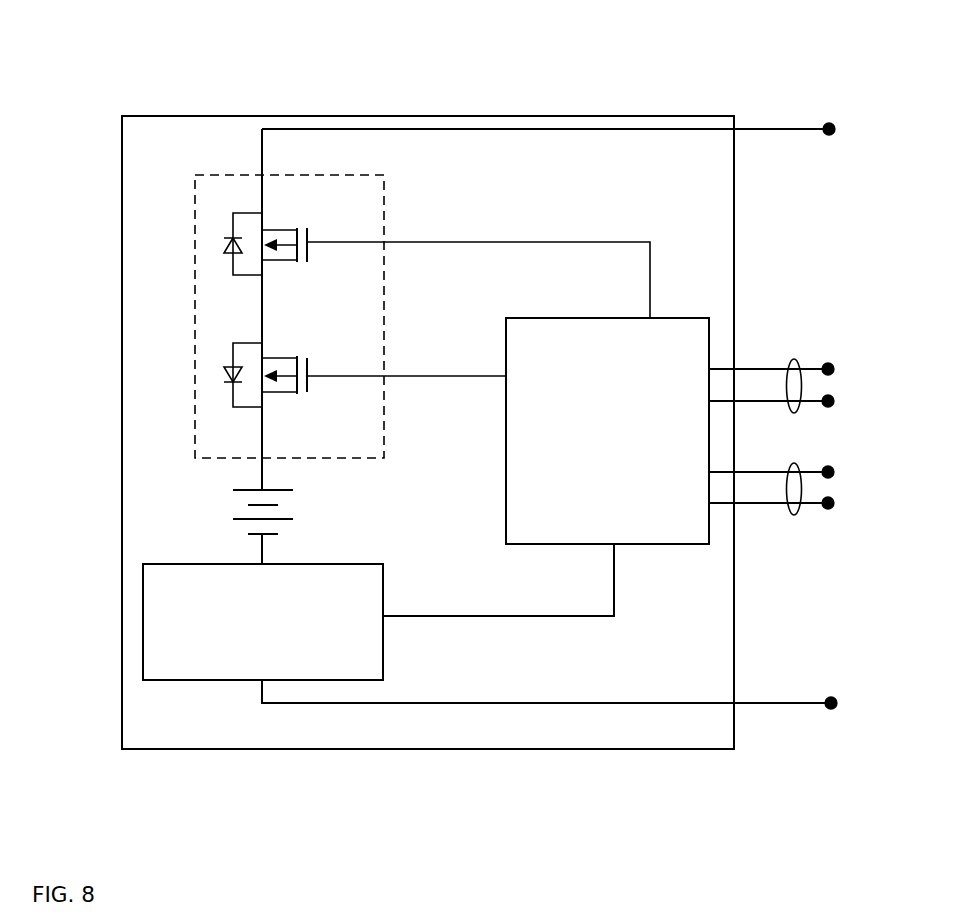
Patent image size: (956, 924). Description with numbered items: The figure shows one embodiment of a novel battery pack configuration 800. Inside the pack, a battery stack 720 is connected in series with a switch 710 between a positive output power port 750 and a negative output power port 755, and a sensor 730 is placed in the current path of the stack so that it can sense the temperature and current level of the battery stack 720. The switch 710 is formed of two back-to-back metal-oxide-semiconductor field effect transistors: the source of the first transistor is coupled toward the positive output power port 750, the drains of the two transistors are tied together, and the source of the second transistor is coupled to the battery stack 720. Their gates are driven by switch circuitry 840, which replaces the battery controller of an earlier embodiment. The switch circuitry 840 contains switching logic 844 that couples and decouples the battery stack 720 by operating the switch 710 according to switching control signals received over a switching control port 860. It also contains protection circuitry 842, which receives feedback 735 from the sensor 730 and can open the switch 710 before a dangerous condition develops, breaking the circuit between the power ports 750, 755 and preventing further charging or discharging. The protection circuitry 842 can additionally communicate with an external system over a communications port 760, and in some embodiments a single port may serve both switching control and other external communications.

The battery pack configuration 800 is at (235, 116).
The switch 710 is at (312, 175).
The battery stack 720 is at (287, 511).
The sensor 730 is at (282, 653).
The feedback 735 is at (445, 616).
The switch circuitry 840 is at (625, 407).
The protection circuitry 842 is at (683, 462).
The switching logic 844 is at (657, 490).
The positive output power port 750 is at (822, 127).
The negative output power port 755 is at (822, 705).
The communications port 760 is at (799, 515).
The switching control port 860 is at (800, 360).